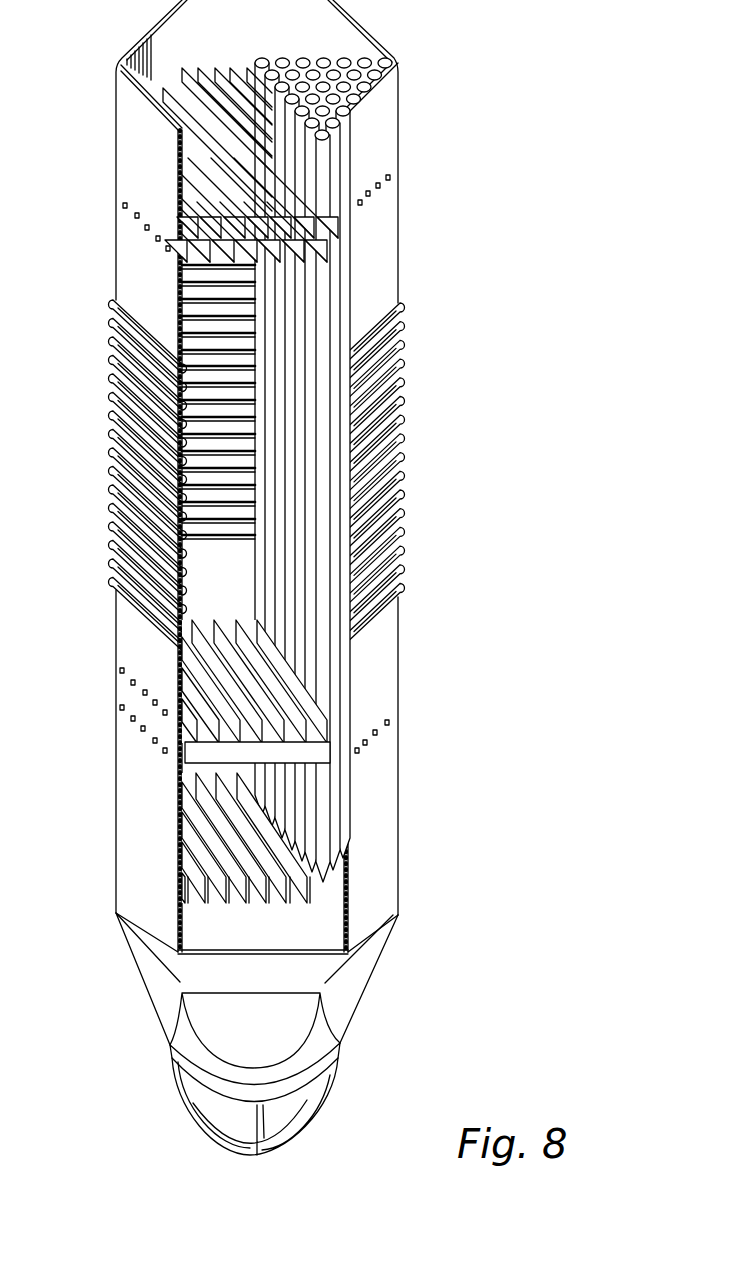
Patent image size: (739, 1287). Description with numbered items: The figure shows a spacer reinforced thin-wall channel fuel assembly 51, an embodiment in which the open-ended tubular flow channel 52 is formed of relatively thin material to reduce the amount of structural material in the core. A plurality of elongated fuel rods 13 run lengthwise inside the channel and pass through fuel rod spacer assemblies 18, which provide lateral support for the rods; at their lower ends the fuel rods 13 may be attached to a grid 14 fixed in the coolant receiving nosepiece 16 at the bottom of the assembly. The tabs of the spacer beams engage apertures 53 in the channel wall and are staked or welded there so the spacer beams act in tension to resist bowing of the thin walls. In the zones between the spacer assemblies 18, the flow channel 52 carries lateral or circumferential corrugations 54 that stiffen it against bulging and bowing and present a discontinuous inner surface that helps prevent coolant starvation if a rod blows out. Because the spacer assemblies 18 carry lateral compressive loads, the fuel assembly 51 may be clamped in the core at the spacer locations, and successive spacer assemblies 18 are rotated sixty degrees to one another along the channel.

The spacer reinforced thin-wall channel fuel assembly 51 is at (513, 254).
The flow channel 52 is at (113, 622).
The apertures 53 is at (122, 708).
The corrugations 54 is at (400, 485).
The fuel rods 13 is at (327, 427).
The fuel rod spacer assemblies 18 is at (183, 263).
The grid 14 is at (320, 882).
The nosepiece 16 is at (155, 1010).